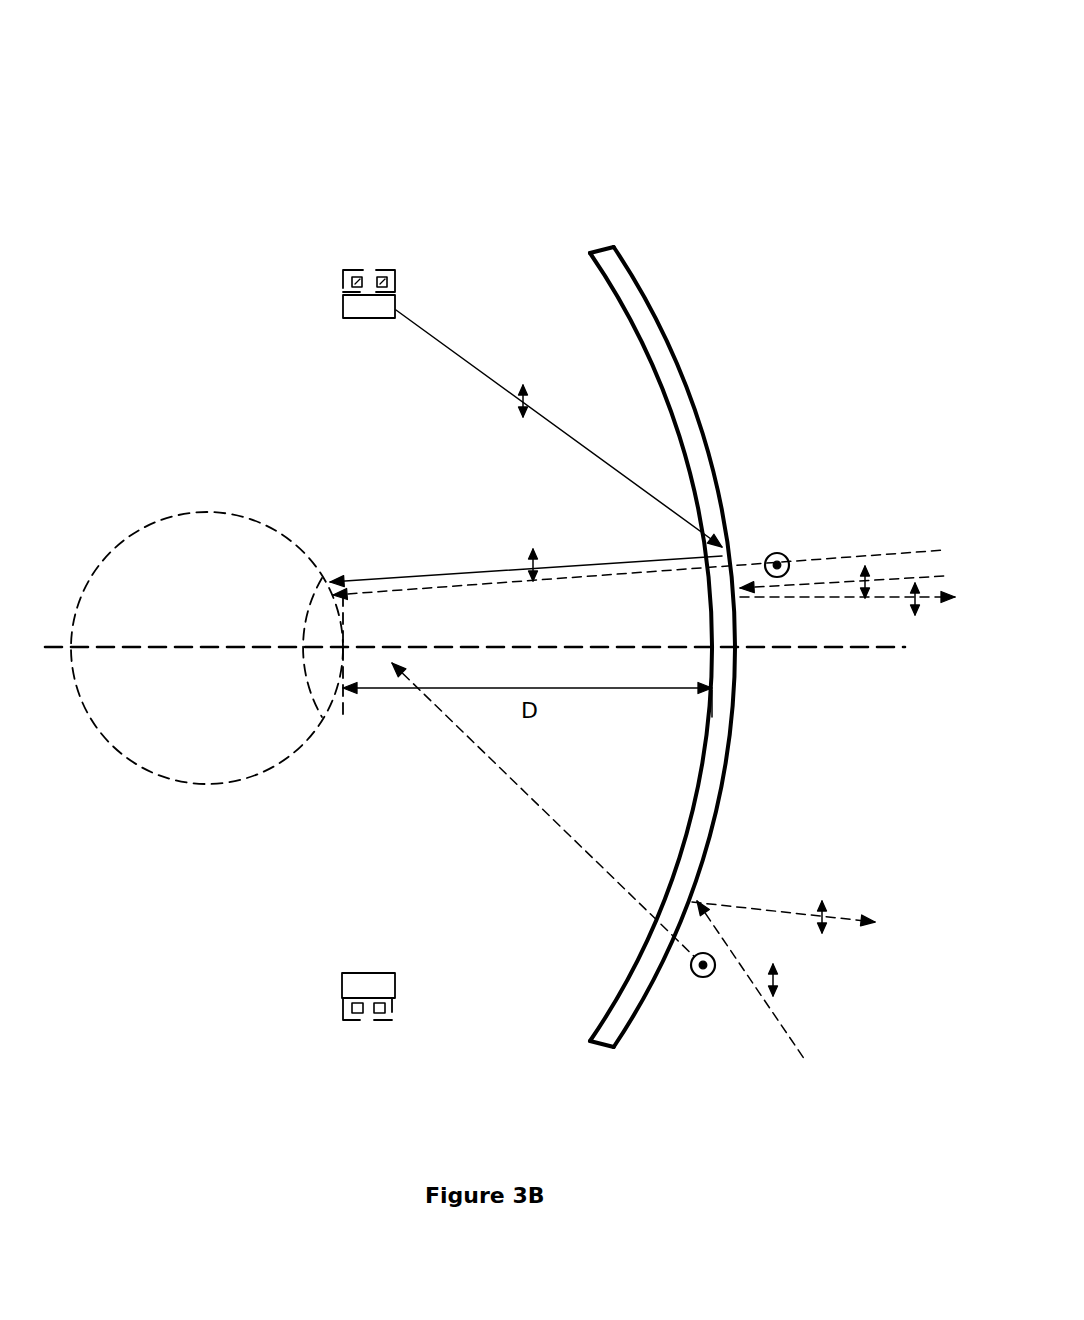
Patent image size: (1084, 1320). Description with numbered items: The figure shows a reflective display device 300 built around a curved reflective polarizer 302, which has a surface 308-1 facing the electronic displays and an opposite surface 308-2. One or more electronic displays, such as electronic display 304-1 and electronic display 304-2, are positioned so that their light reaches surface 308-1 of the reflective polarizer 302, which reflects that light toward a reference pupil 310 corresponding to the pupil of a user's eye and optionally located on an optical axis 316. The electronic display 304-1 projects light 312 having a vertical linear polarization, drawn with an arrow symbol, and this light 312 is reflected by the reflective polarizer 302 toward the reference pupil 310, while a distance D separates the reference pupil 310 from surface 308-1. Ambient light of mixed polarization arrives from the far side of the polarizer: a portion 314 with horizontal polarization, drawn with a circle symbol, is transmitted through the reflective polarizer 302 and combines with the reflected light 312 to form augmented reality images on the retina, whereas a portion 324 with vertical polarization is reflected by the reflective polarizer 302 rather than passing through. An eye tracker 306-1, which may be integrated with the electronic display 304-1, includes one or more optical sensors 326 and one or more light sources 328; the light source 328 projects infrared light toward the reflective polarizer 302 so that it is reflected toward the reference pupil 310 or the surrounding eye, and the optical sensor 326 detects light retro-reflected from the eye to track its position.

The reflective display device 300 is at (566, 100).
The reflective polarizer 302 is at (634, 623).
The electronic display 304-1 is at (342, 307).
The electronic display 304-2 is at (342, 988).
The eye tracker 306-1 is at (351, 634).
The surface 308-1 is at (598, 298).
The surface 308-2 is at (645, 258).
The reference pupil 310 is at (337, 627).
The light 312 is at (467, 369).
The portion of ambient light 314 is at (815, 560).
The optical axis 316 is at (787, 650).
The portion of ambient light 324 is at (790, 1000).
The optical sensor 326 is at (360, 276).
The light source 328 is at (392, 276).